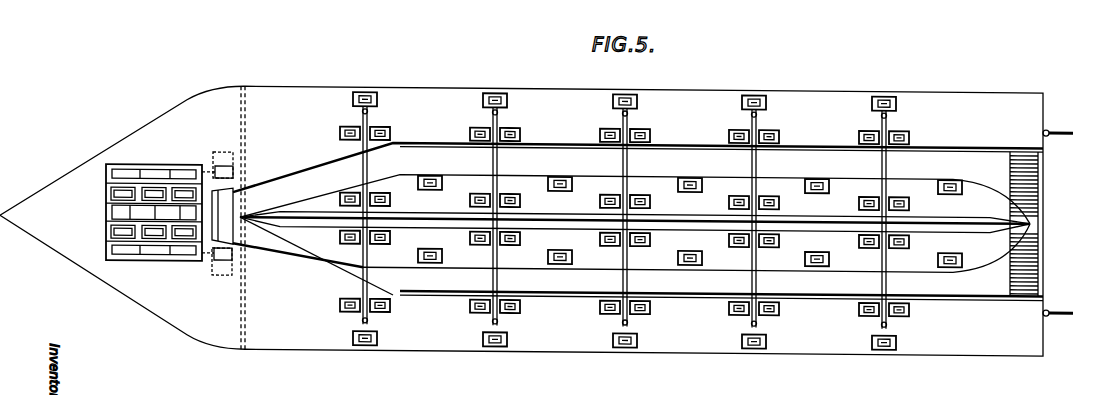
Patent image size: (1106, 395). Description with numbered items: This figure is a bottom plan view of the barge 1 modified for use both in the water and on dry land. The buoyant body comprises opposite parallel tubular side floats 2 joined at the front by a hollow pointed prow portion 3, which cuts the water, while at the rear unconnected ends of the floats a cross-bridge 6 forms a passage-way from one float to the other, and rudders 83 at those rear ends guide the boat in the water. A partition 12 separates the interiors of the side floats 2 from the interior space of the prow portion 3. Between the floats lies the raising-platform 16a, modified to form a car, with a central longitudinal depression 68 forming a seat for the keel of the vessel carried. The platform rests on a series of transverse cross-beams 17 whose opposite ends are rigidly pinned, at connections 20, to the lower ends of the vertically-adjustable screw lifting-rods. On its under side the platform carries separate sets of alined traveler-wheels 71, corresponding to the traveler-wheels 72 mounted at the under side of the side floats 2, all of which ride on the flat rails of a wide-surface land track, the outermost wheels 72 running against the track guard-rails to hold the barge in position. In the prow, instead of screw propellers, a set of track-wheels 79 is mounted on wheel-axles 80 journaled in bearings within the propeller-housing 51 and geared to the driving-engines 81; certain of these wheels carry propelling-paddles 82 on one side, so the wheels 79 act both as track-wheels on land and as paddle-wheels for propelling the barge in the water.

The barge 1 is at (644, 225).
The tubular side floats 2 is at (638, 221).
The hollow pointed prow portion 3 is at (122, 216).
The cross-bridge 6 is at (1042, 193).
The partition 12 is at (248, 135).
The raising-platform 16a is at (525, 257).
The transverse cross-beams 17 is at (368, 158).
The cross-beam end connections 20 is at (499, 116).
The propeller-housing 51 is at (129, 172).
The central longitudinal depression 68 is at (457, 221).
The traveler-wheels 71 is at (425, 186).
The traveler-wheels 72 is at (372, 93).
The track-wheels 79 is at (155, 176).
The wheel-axles 80 is at (108, 215).
The driving-engines 81 is at (224, 154).
The propelling-paddles 82 is at (109, 198).
The rudders 83 is at (1064, 131).